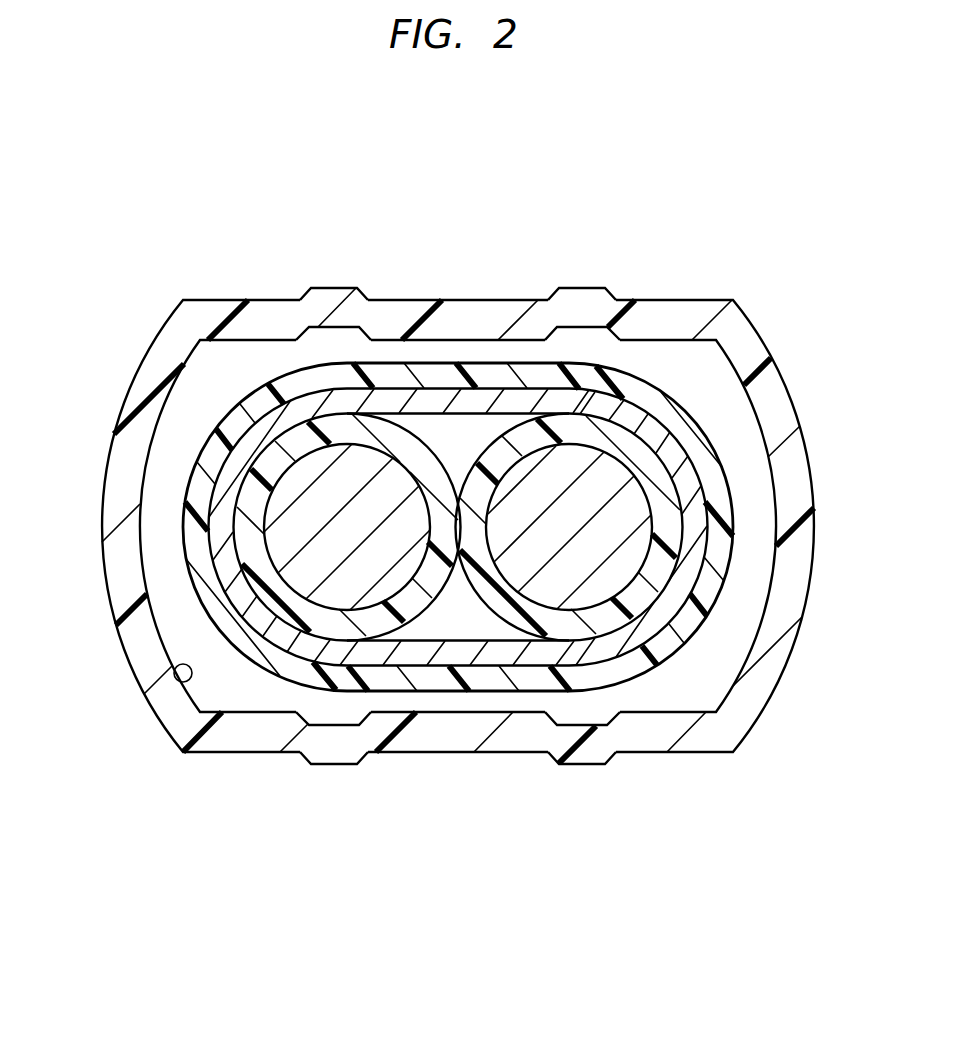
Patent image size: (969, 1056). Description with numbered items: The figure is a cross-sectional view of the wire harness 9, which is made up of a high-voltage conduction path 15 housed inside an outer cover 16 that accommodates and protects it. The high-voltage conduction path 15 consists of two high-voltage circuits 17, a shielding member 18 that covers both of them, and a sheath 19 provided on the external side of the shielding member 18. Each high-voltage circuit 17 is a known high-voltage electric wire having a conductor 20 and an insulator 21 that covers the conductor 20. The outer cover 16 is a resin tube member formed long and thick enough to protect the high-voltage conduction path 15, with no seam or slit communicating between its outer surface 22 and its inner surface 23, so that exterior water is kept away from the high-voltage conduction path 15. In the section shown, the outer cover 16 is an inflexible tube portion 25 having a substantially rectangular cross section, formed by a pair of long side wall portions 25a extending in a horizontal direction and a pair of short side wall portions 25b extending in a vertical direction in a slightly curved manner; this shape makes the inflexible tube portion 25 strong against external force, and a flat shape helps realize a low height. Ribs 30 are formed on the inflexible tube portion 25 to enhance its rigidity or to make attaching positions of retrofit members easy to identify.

The wire harness 9 is at (522, 249).
The high-voltage conduction path 15 is at (254, 664).
The outer cover 16 is at (689, 754).
The high-voltage circuit 17 is at (274, 186).
The shielding member 18 is at (487, 655).
The sheath 19 is at (437, 680).
The conductor 20 is at (305, 481).
The insulator 21 is at (337, 430).
The outer surface 22 is at (138, 682).
The inner surface 23 is at (183, 678).
The inflexible tube portion 25 is at (409, 300).
The long side wall portion 25a is at (479, 312).
The short side wall portion 25b is at (148, 397).
The rib 30 is at (341, 288).